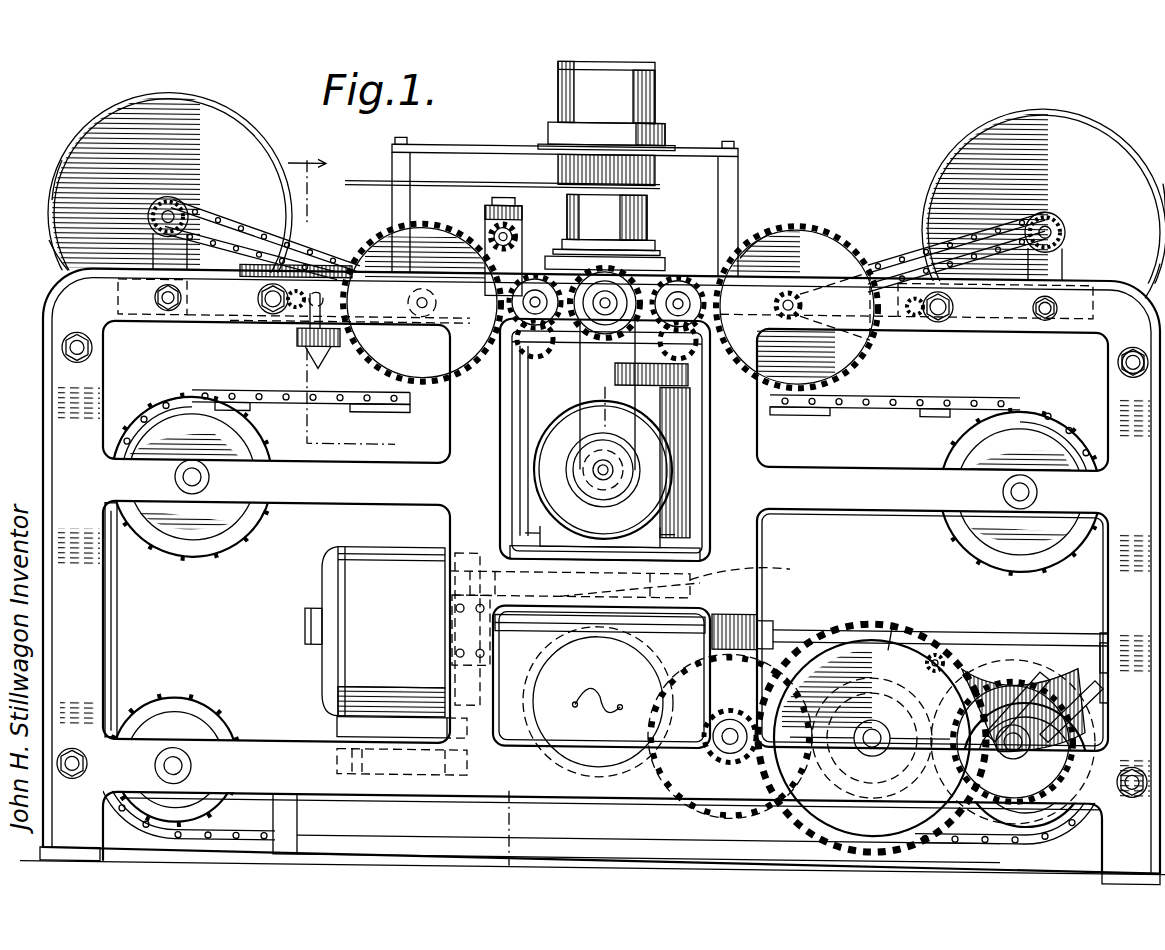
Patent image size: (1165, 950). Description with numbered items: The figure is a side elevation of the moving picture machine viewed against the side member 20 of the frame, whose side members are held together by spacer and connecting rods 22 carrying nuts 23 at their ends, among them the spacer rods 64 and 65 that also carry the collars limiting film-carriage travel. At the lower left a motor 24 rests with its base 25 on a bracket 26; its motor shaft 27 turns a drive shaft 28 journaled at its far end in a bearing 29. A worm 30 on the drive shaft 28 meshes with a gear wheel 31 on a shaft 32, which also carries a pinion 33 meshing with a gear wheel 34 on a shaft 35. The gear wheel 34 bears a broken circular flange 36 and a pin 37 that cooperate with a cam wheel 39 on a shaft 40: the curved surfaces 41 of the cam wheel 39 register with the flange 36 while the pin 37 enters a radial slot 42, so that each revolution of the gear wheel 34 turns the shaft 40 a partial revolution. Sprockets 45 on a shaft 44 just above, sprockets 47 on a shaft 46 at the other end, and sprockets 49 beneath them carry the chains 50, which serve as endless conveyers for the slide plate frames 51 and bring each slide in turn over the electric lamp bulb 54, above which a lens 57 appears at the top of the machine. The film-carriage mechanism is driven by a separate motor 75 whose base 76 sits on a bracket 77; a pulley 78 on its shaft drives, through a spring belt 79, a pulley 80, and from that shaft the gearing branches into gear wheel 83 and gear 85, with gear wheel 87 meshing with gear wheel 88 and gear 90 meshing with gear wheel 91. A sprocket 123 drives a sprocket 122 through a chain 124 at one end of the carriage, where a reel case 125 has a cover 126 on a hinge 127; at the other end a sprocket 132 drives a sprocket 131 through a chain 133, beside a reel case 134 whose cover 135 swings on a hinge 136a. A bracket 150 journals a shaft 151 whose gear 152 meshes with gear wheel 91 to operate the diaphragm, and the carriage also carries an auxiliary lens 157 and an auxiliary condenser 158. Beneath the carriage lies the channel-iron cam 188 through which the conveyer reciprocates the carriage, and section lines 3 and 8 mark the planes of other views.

The section line 3- 3 is at (398, 506).
The shaft 8 is at (650, 179).
The side member 20 is at (592, 576).
The spacer and connecting rod 22 is at (1133, 333).
The nut 23 is at (1133, 364).
The motor 24 is at (406, 631).
The base 25 is at (402, 727).
The bracket 26 is at (320, 760).
The motor shaft 27 is at (306, 636).
The drive shaft 28 is at (801, 654).
The bearing 29 is at (1110, 646).
The worm 30 is at (772, 612).
The gear wheel 31 is at (806, 628).
The shaft 32 is at (717, 741).
The pinion 33 is at (730, 736).
The gear wheel 34 is at (902, 618).
The shaft 35 is at (870, 748).
The broken circular flange 36 is at (938, 644).
The pin 37 is at (952, 668).
The cam wheel 39 is at (1060, 722).
The shaft 40 is at (996, 741).
The curved surface 41 is at (1023, 701).
The radial slot 42 is at (1065, 684).
The shaft 44 is at (1038, 482).
The sprocket 45 is at (1050, 552).
The shaft 46 is at (212, 478).
The sprocket 47 is at (222, 552).
The sprocket 49 is at (192, 700).
The chain 50 is at (903, 406).
The slide plate frame 51 is at (118, 640).
The electric lamp bulb 54 is at (598, 702).
The motor 57 is at (660, 98).
The spacer rod 64 is at (954, 298).
The spacer rod 65 is at (258, 298).
The motor 75 is at (603, 470).
The base 76 is at (605, 543).
The bracket 77 is at (593, 582).
The pulley 78 is at (606, 478).
The spring belt 79 is at (638, 398).
The pulley 80 is at (652, 438).
The gear wheel 83 is at (607, 440).
The gear 85 is at (760, 236).
The gear wheel 87 is at (602, 332).
The gear wheel 88 is at (360, 390).
The gear 90 is at (688, 266).
The gear wheel 91 is at (438, 226).
The sprocket 122 is at (1065, 220).
The sprocket 123 is at (823, 305).
The chain 124 is at (893, 250).
The reel case 125 is at (1156, 266).
The cover 126 is at (1156, 150).
The hinge 127 is at (1162, 178).
The sprocket 131 is at (190, 206).
The sprocket 132 is at (340, 326).
The chain 133 is at (333, 258).
The reel case 134 is at (58, 250).
The cover 135 is at (128, 122).
The hinge 136a is at (58, 176).
The bracket 150 is at (516, 204).
The shaft 151 is at (518, 228).
The gear 152 is at (510, 233).
The auxiliary lens 157 is at (648, 226).
The auxiliary condenser 158 is at (692, 573).
The cam 188 is at (800, 380).